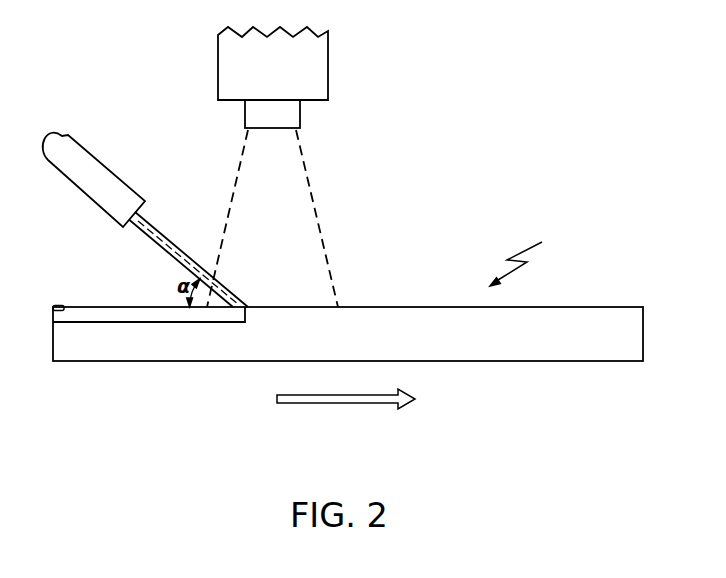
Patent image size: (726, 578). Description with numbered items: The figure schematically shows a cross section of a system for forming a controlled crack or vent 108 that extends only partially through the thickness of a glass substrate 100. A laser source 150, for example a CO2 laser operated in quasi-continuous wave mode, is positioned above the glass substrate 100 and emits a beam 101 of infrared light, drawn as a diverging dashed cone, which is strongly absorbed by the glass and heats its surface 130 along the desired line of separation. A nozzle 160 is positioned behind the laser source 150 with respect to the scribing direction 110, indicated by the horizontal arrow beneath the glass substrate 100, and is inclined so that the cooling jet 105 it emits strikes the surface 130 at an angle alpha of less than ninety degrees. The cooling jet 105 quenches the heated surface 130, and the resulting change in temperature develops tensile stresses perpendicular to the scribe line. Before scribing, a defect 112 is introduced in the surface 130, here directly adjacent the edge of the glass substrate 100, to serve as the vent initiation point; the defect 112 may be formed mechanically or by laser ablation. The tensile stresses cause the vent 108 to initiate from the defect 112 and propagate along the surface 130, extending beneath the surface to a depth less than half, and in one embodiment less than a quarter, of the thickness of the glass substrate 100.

The glass substrate 100 is at (536, 256).
The beam 101 is at (311, 192).
The cooling jet 105 is at (164, 229).
The vent 108 is at (147, 322).
The scribing direction 110 is at (345, 403).
The defect 112 is at (62, 306).
The surface 130 is at (608, 307).
The laser source 150 is at (328, 89).
The nozzle 160 is at (93, 155).